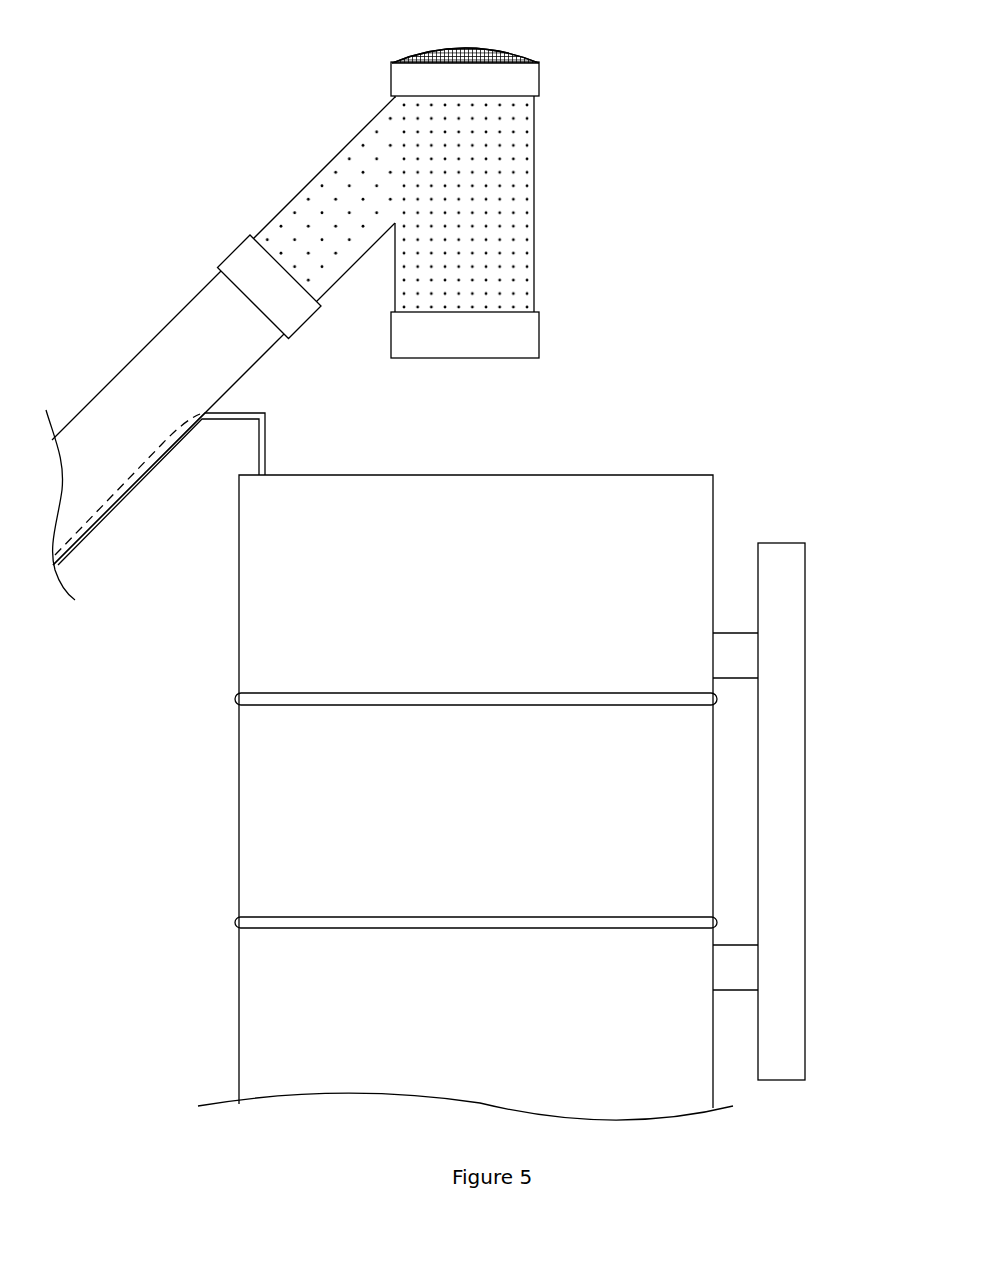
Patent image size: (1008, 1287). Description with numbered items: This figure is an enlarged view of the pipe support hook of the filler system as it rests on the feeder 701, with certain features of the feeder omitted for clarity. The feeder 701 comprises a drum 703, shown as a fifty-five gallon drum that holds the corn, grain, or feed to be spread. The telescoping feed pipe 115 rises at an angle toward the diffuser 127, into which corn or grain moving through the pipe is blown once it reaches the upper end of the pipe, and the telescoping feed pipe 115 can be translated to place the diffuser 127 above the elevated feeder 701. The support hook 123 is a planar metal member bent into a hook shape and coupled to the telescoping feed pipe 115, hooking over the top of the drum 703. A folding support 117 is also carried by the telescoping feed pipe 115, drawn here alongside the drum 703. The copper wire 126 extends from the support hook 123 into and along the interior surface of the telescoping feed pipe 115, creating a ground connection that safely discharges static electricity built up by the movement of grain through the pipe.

The telescoping feed pipe 115 is at (197, 347).
The diffuser 127 is at (560, 172).
The feeder 701 is at (538, 697).
The drum 703 is at (488, 612).
The folding support 117 is at (787, 735).
The support hook 123 is at (265, 448).
The copper wire 126 is at (158, 448).